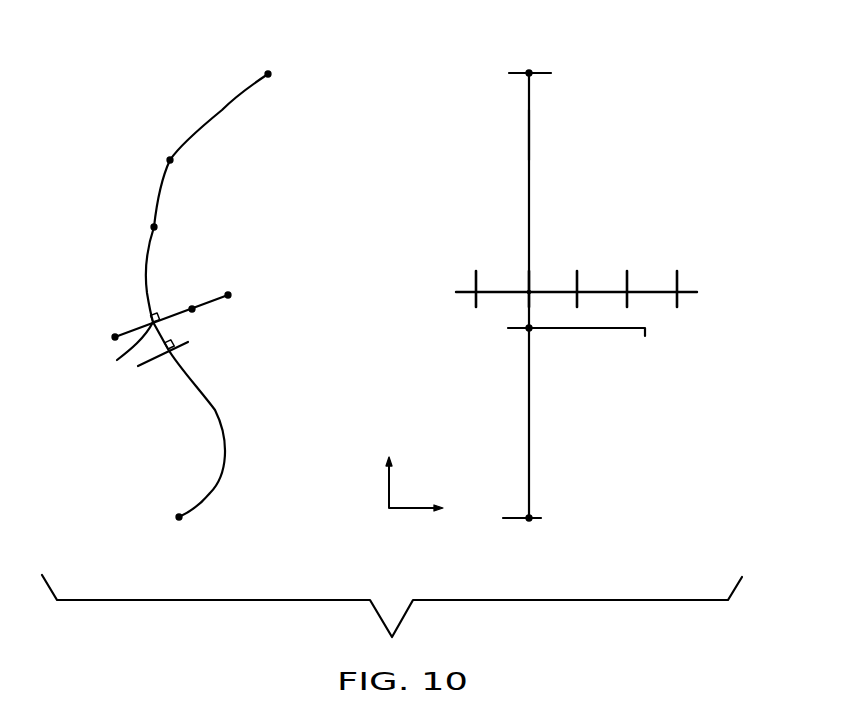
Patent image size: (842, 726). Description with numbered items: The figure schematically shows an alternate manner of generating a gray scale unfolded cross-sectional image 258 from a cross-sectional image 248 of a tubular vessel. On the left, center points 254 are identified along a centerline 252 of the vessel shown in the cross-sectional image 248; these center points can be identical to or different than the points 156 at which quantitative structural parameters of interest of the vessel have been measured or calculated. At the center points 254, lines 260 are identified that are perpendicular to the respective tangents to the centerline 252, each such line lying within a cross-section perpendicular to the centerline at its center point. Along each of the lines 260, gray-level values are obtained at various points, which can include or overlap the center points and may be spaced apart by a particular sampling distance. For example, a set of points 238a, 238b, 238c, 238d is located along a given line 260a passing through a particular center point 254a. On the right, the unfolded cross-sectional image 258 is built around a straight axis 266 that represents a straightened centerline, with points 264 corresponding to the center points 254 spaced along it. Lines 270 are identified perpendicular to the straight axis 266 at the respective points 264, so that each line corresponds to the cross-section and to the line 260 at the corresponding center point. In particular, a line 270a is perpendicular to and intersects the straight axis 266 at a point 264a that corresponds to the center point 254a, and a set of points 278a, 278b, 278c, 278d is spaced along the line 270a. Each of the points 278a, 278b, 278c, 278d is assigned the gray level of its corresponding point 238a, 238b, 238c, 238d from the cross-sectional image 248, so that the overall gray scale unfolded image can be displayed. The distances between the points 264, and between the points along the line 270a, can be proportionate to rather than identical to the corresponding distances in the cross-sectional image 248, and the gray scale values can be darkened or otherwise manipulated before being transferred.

The cross-sectional image 248 is at (95, 175).
The centerline 252 is at (224, 108).
The center points 254 is at (272, 74).
The points 156 is at (154, 227).
The line 260a is at (220, 292).
The point 238a is at (114, 336).
The point 238b is at (106, 363).
The point 238c is at (192, 307).
The point 238d is at (236, 298).
The center point 254a is at (107, 363).
The lines 260 is at (191, 353).
The unfolded cross-sectional image 258 is at (700, 125).
The points 264 is at (530, 71).
The point 264a is at (529, 292).
The straight axis 266 is at (517, 132).
The lines 270 is at (645, 335).
The line 270a is at (695, 293).
The point 278a is at (474, 295).
The point 278b is at (529, 292).
The point 278c is at (579, 290).
The point 278d is at (629, 292).